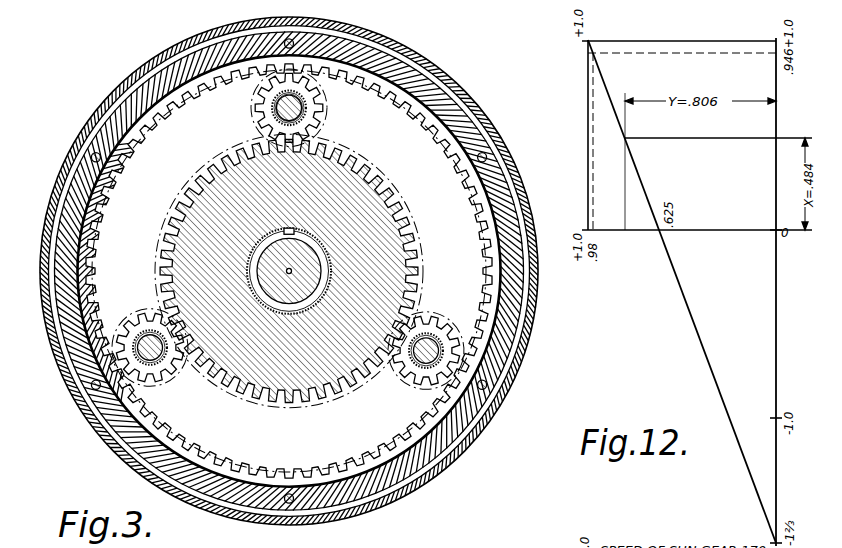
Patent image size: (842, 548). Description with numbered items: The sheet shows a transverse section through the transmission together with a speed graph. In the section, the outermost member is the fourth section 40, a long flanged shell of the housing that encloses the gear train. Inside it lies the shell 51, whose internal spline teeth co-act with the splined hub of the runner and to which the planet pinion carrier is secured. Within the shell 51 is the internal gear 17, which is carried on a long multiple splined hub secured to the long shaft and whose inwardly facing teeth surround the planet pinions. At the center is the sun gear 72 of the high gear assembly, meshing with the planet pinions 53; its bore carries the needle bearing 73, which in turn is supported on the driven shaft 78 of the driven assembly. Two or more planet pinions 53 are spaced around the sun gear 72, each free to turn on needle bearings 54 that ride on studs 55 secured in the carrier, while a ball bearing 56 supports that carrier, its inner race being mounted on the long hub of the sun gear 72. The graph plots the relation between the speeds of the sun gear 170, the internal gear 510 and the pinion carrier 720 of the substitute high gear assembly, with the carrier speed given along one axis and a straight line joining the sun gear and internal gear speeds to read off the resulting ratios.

In FIG. 3, the fourth section 40 is at (407, 57).
In FIG. 3, the shell 51 is at (432, 97).
In FIG. 3, the internal gear 17 is at (159, 134).
In FIG. 3, the sun gear 72 is at (178, 202).
In FIG. 3, the needle bearing 73 is at (308, 234).
In FIG. 3, the driven shaft 78 is at (312, 256).
In FIG. 3, the planet pinion 53 is at (321, 116).
In FIG. 3, the needle bearing 54 is at (270, 101).
In FIG. 3, the stud 55 is at (158, 358).
In FIG. 3, the ball bearing 56 is at (264, 114).
In FIG. 12, the sun gear 170 is at (684, 28).
In FIG. 12, the internal gear 510 is at (685, 249).
In FIG. 12, the pinion carrier 720 is at (809, 377).